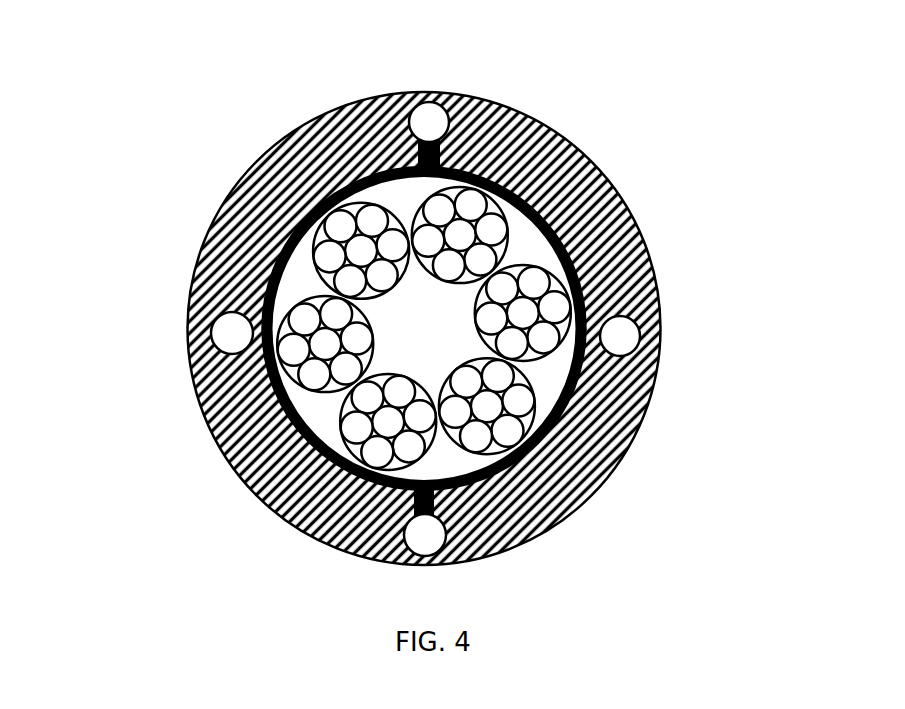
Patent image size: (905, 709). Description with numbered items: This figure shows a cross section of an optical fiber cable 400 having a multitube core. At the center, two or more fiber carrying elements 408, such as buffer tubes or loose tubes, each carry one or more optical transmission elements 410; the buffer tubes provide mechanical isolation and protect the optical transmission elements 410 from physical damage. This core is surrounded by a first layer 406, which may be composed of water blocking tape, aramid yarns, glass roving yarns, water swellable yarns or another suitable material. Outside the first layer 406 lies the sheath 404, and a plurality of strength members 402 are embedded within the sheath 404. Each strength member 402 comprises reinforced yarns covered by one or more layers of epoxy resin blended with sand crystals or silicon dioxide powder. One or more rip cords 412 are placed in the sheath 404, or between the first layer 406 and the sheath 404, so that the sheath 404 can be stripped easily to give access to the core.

The optical fiber cable 400 is at (220, 76).
The strength members 402 is at (620, 338).
The sheath 404 is at (602, 443).
The first layer 406 is at (578, 388).
The fiber carrying elements 408 is at (513, 328).
The optical transmission elements 410 is at (487, 261).
The rip cords 412 is at (440, 158).